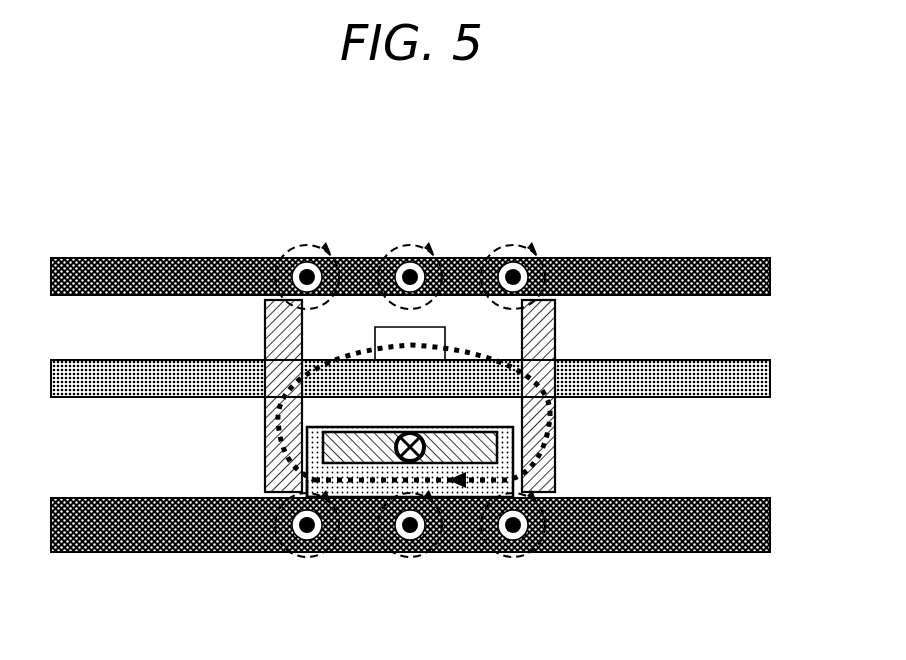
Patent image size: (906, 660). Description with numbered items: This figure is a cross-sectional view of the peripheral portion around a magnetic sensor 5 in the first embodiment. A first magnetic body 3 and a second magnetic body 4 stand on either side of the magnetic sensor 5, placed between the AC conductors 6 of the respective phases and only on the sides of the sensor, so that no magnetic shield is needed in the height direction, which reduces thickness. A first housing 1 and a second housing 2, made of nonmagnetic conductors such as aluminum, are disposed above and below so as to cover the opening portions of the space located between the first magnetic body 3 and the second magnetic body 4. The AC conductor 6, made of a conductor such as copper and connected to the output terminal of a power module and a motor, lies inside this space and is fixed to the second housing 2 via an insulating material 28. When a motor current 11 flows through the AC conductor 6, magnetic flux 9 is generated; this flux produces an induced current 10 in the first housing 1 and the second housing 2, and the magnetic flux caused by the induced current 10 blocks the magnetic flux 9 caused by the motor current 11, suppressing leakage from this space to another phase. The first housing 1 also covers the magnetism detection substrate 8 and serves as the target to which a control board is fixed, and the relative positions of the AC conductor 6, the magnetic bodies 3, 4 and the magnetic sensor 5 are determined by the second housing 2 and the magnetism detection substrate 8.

The first housing 1 is at (652, 275).
The second housing 2 is at (128, 535).
The first magnetic body 3 is at (277, 337).
The second magnetic body 4 is at (543, 470).
The magnetic sensor 5 is at (385, 340).
The AC conductor 6 is at (345, 428).
The magnetism detection substrate 8 is at (130, 392).
The magnetic flux 9 is at (550, 413).
The induced current 10 is at (513, 277).
The motor current 11 is at (412, 458).
The insulating material 28 is at (300, 487).